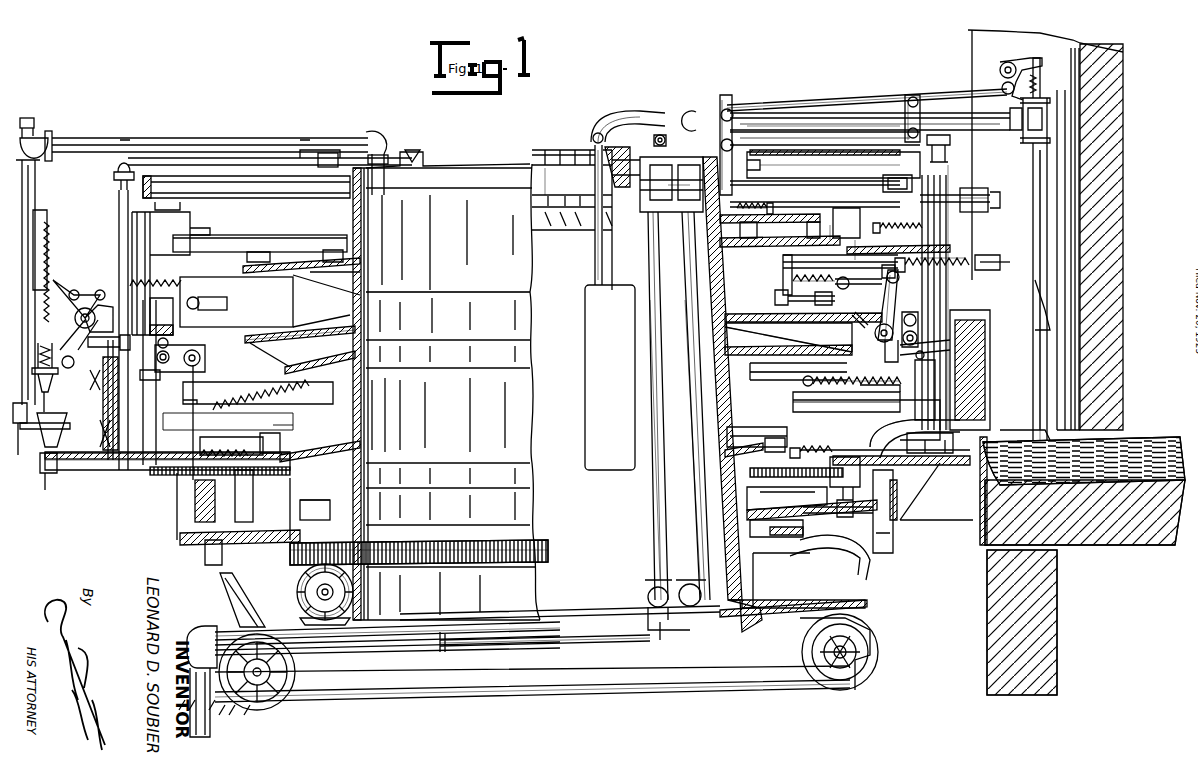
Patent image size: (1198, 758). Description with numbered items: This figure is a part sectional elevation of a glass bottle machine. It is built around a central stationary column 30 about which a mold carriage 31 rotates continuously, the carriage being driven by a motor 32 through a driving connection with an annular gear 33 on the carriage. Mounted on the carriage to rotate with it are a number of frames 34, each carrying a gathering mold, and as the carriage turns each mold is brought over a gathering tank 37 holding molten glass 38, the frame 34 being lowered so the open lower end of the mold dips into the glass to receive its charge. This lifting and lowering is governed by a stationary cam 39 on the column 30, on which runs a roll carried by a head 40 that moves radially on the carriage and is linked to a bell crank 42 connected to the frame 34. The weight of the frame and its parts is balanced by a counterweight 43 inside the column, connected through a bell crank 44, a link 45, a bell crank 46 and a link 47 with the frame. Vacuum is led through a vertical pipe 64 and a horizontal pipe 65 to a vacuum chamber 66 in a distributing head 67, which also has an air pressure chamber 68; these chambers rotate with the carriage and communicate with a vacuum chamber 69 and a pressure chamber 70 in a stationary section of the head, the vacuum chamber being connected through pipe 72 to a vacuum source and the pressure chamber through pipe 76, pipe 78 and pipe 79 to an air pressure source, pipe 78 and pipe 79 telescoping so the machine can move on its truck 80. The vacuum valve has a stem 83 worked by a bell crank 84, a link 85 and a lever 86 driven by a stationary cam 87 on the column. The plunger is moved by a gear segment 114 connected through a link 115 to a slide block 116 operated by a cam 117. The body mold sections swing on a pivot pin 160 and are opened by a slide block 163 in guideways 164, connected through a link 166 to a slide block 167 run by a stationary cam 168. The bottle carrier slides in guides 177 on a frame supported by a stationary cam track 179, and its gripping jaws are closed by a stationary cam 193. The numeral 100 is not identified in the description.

The central stationary column 30 is at (530, 450).
The mold carriage 31 is at (262, 550).
The motor 32 is at (355, 590).
The annular gear 33 is at (548, 552).
The frame 34 is at (120, 290).
The gathering tank 37 is at (1000, 497).
The molten glass 38 is at (1140, 443).
The stationary cam 39 is at (298, 330).
The head 40 is at (790, 285).
The bell crank 42 is at (202, 356).
The counterweight 43 is at (583, 378).
The bell crank 44 is at (610, 117).
The link 45 is at (736, 105).
The bell crank 46 is at (908, 110).
The link 47 is at (950, 160).
The vertical pipe 64 is at (1033, 174).
The horizontal pipe 65 is at (812, 118).
The vacuum chamber 66 is at (686, 118).
The distributing head 67 is at (655, 135).
The air pressure chamber 68 is at (580, 180).
The vacuum chamber 69 is at (682, 198).
The pressure chamber 70 is at (648, 205).
The pipe 72 is at (670, 480).
The pipe 76 is at (690, 508).
The pipe 78 is at (598, 641).
The pipe 79 is at (360, 648).
The truck 80 is at (752, 688).
The valve stem 83 is at (1043, 280).
The bell crank 84 is at (1008, 62).
The link 85 is at (942, 97).
The lever 86 is at (762, 178).
The stationary cam 87 is at (752, 199).
The rod 100 is at (988, 218).
The gear segment 114 is at (990, 268).
The link 115 is at (966, 262).
The slide block 116 is at (858, 262).
The cam 117 is at (828, 250).
The pivot pin 160 is at (968, 430).
The slide block 163 is at (862, 400).
The guideways 164 is at (795, 400).
The link 166 is at (800, 384).
The slide block 167 is at (880, 312).
The stationary cam 168 is at (852, 324).
The guides 177 is at (98, 470).
The stationary cam track 179 is at (845, 565).
The stationary cam 193 is at (300, 515).